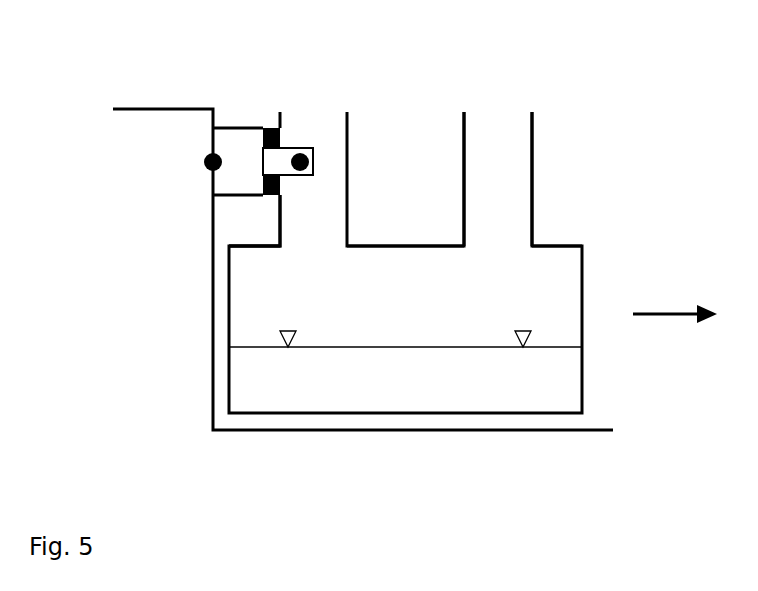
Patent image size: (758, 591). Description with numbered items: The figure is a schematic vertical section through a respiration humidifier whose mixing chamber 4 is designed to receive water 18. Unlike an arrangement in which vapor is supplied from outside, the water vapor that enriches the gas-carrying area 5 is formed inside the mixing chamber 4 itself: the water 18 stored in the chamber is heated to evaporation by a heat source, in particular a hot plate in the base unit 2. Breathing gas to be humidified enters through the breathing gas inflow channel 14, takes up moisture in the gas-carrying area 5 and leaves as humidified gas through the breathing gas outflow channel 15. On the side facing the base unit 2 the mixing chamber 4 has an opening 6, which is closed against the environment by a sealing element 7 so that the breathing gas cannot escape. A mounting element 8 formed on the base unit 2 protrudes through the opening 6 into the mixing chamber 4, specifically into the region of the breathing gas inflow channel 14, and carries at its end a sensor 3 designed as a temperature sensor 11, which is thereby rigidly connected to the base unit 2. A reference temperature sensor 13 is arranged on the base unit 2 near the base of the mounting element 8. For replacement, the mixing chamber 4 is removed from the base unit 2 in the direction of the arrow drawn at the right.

The base unit 2 is at (162, 130).
The sensor 3 is at (343, 115).
The mixing chamber 4 is at (583, 295).
The gas-carrying area 5 is at (498, 297).
The opening 6 is at (260, 197).
The sealing element 7 is at (263, 128).
The mounting element 8 is at (282, 162).
The temperature sensor 11 is at (308, 150).
The reference temperature sensor 13 is at (204, 162).
The breathing gas inflow channel 14 is at (295, 113).
The breathing gas outflow channel 15 is at (497, 129).
The water 18 is at (532, 382).